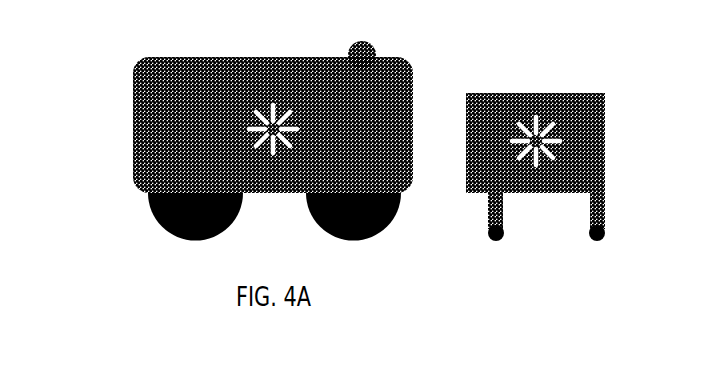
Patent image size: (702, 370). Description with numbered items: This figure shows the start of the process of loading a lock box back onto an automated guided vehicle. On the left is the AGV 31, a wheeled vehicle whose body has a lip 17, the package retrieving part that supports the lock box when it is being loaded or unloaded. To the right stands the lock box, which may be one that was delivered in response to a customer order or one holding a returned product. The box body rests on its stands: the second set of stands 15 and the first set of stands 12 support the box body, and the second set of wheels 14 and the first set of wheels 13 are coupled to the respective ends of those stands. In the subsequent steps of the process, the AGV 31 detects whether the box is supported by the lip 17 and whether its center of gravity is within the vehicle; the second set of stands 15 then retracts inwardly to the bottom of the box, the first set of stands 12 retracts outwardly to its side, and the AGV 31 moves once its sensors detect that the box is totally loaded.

The AGV 31 is at (121, 82).
The lip 17 is at (398, 177).
The second set of stands 15 is at (478, 202).
The first set of stands 12 is at (594, 203).
The second set of wheels 14 is at (481, 227).
The first set of wheels 13 is at (596, 228).